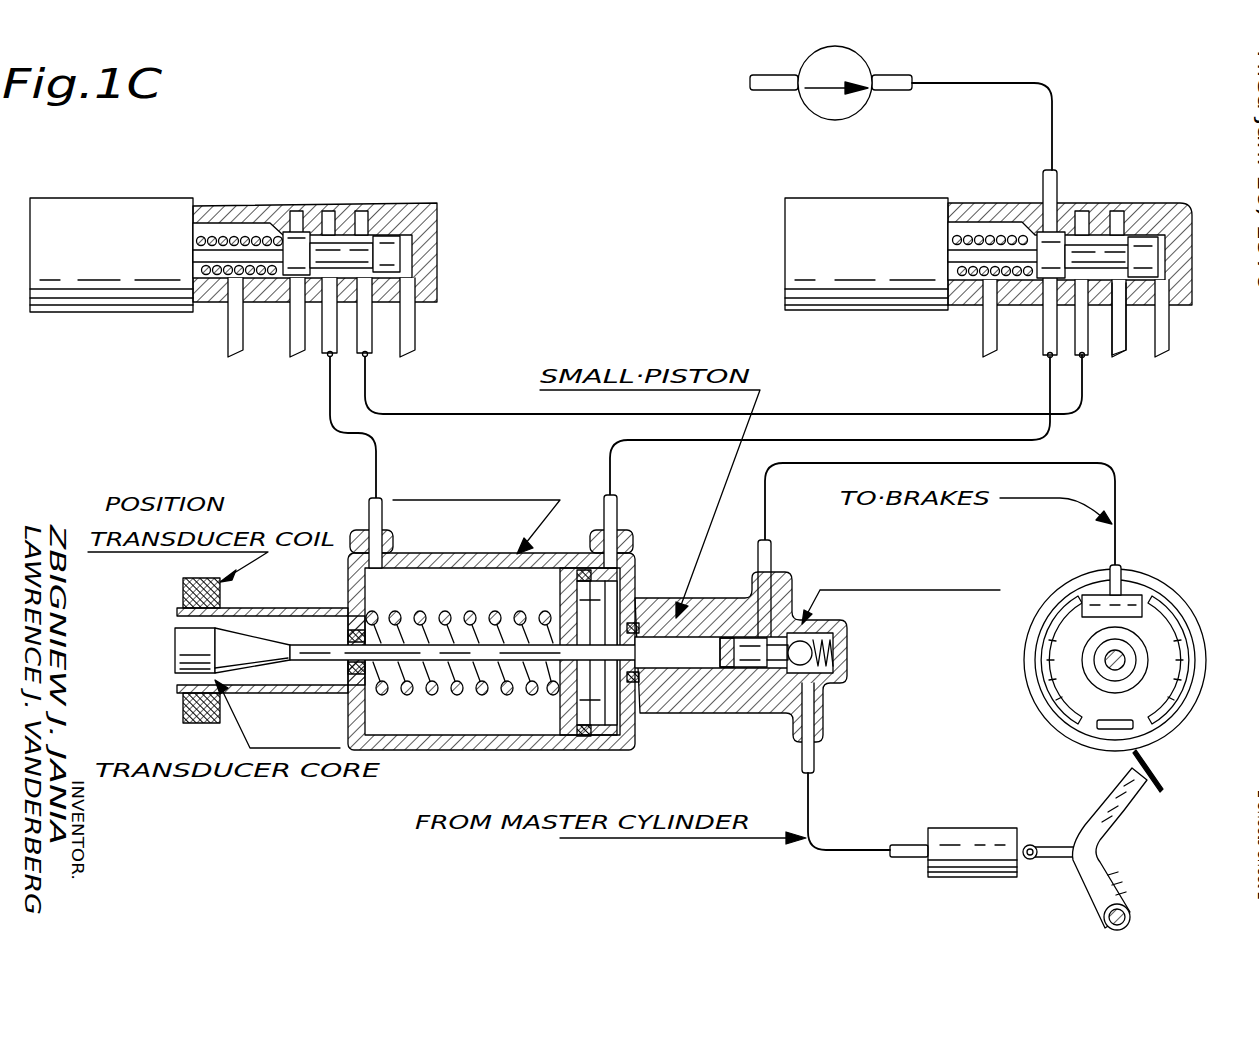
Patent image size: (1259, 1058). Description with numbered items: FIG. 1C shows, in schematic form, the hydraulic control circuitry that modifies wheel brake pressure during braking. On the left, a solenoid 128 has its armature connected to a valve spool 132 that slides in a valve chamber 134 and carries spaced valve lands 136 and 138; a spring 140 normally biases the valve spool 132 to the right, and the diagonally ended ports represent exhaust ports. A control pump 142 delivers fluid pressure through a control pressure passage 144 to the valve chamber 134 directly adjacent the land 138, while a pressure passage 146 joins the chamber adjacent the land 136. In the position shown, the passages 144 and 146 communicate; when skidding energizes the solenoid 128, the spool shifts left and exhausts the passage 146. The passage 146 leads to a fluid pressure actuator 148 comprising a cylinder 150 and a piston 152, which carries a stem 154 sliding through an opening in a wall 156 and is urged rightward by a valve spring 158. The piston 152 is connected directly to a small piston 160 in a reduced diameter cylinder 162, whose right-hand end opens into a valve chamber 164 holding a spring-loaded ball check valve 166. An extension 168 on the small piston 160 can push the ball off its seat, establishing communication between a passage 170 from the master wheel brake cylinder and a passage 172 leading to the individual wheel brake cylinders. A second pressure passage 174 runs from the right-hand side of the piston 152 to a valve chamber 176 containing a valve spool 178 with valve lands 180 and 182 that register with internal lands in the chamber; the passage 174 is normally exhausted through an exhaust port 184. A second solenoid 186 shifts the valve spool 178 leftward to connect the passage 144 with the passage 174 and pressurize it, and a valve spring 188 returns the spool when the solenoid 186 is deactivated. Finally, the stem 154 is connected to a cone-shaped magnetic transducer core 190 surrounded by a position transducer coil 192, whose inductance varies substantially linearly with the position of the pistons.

The solenoid 128 is at (80, 166).
The valve spool 132 is at (345, 246).
The valve chamber 134 is at (296, 222).
The valve land 136 is at (287, 200).
The valve land 138 is at (390, 236).
The spring 140 is at (215, 233).
The control pump 142 is at (800, 60).
The control pressure passage 144 is at (490, 413).
The pressure passage 146 is at (340, 432).
The fluid pressure actuator 148 is at (478, 545).
The cylinder 150 is at (575, 738).
The piston 152 is at (645, 570).
The stem 154 is at (493, 656).
The wall 156 is at (348, 580).
The valve spring 158 is at (403, 695).
The small piston 160 is at (720, 653).
The reduced diameter cylinder 162 is at (722, 662).
The valve chamber 164 is at (833, 640).
The ball check valve 166 is at (845, 684).
The extension 168 is at (790, 660).
The passage 170 is at (813, 767).
The passage 172 is at (772, 553).
The second pressure passage 174 is at (1083, 337).
The valve chamber 176 is at (1162, 258).
The valve spool 178 is at (1100, 247).
The valve land 180 is at (1060, 240).
The valve land 182 is at (1152, 247).
The exhaust port 184 is at (1120, 348).
The solenoid 186 is at (858, 205).
The valve spring 188 is at (972, 242).
The transducer core 190 is at (180, 633).
The position transducer coil 192 is at (183, 590).